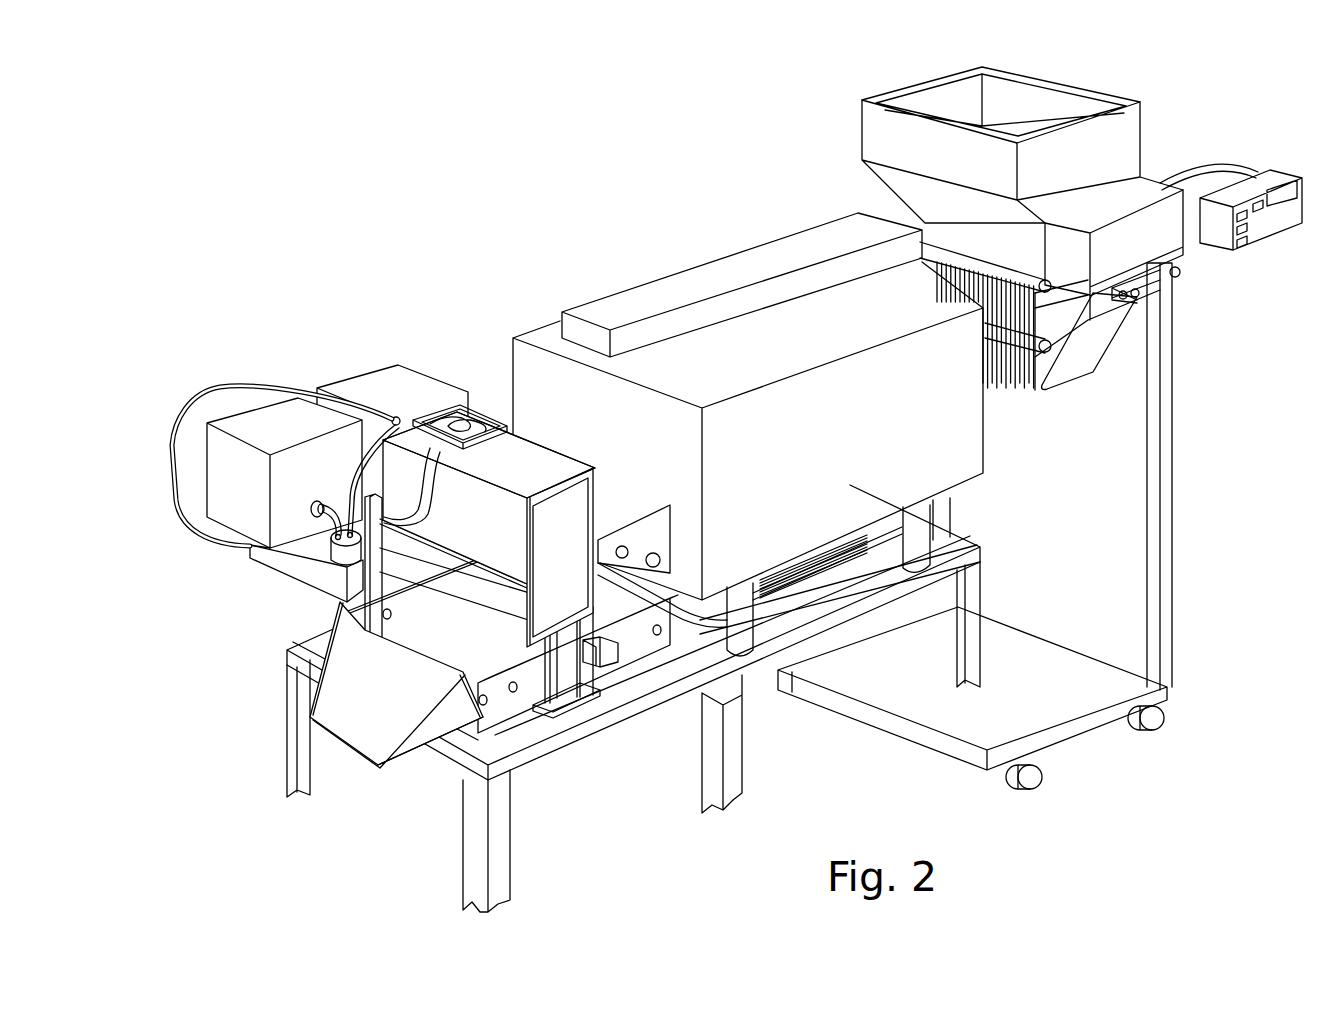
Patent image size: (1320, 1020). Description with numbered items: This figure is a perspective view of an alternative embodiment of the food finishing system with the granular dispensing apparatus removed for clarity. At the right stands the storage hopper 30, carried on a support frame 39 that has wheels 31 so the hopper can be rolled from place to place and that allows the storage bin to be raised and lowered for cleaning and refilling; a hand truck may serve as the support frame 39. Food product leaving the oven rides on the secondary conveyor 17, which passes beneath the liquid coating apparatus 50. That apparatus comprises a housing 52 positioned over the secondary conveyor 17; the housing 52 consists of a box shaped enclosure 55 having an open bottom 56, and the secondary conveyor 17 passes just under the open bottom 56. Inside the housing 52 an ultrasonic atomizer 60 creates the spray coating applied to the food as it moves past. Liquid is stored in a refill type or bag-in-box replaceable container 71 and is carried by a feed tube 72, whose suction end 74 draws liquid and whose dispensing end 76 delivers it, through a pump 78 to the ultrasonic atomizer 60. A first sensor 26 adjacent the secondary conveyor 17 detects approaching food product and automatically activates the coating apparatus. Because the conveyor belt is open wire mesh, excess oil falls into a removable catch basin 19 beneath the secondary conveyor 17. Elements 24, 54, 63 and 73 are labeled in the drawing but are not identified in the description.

The secondary conveyor 17 is at (409, 648).
The catch basin 19 is at (640, 638).
The base 24 is at (245, 563).
The first sensor 26 is at (612, 665).
The storage hopper 30 is at (1142, 92).
The wheels 31 is at (1040, 797).
The support frame 39 is at (1182, 423).
The liquid coating apparatus 50 is at (380, 338).
The housing 52 is at (603, 466).
The control housing 54 is at (487, 420).
The box shaped enclosure 55 is at (508, 456).
The open bottom 56 is at (497, 636).
The ultrasonic atomizer 60 is at (398, 414).
The hose 63 is at (223, 378).
The refill type container 71 is at (204, 463).
The feed tube 72 is at (353, 476).
The connector 73 is at (310, 506).
The suction end 74 is at (321, 535).
The dispensing end 76 is at (441, 452).
The pump 78 is at (341, 551).